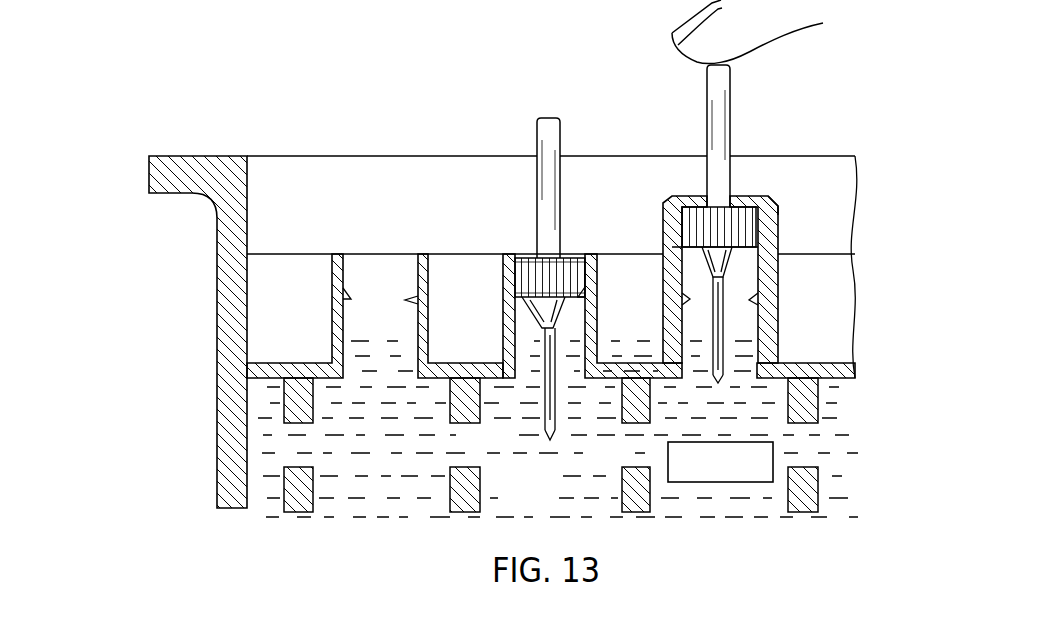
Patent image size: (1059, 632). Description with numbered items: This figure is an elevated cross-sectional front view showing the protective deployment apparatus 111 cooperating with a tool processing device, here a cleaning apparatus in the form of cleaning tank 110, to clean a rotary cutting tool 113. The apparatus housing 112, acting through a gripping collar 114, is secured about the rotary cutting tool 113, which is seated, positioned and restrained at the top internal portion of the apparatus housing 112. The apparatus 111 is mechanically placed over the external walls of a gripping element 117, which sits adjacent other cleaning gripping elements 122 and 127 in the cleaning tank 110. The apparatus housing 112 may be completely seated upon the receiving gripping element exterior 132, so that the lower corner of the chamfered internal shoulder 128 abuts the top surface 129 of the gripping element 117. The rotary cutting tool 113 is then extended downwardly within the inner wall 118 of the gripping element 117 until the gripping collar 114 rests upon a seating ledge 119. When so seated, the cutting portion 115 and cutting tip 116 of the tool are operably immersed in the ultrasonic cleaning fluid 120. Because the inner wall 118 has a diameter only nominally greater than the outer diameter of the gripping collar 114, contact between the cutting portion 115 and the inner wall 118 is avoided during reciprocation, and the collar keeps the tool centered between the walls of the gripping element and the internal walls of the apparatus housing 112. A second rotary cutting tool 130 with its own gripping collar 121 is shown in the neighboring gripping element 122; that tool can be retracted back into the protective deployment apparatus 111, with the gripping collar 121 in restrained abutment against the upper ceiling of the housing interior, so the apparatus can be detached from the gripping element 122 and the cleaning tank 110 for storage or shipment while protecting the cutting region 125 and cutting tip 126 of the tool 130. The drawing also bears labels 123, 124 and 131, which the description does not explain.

The cleaning tank 110 is at (167, 152).
The protective deployment apparatus 111 is at (770, 195).
The apparatus housing 112 is at (751, 222).
The rotary cutting tool 113 is at (731, 121).
The gripping collar 114 is at (702, 213).
The cutting portion 115 is at (722, 329).
The cutting tip 116 is at (722, 384).
The gripping element 117 is at (765, 277).
The inner wall 118 is at (690, 284).
The seating ledge 119 is at (773, 284).
The ultrasonic cleaning fluid 120 is at (592, 465).
The gripping collar 121 is at (535, 273).
The gripping element 122 is at (499, 277).
The well shoulder 123 is at (508, 312).
The piston seal 124 is at (573, 293).
The cutting region 125 is at (543, 410).
The cutting tip 126 is at (549, 438).
The gripping element 127 is at (331, 290).
The chamfered internal shoulder 128 is at (663, 228).
The top surface 129 is at (668, 265).
The rotary cutting tool 130 is at (543, 130).
The liquid container 131 is at (745, 472).
The gripping element exterior 132 is at (786, 262).